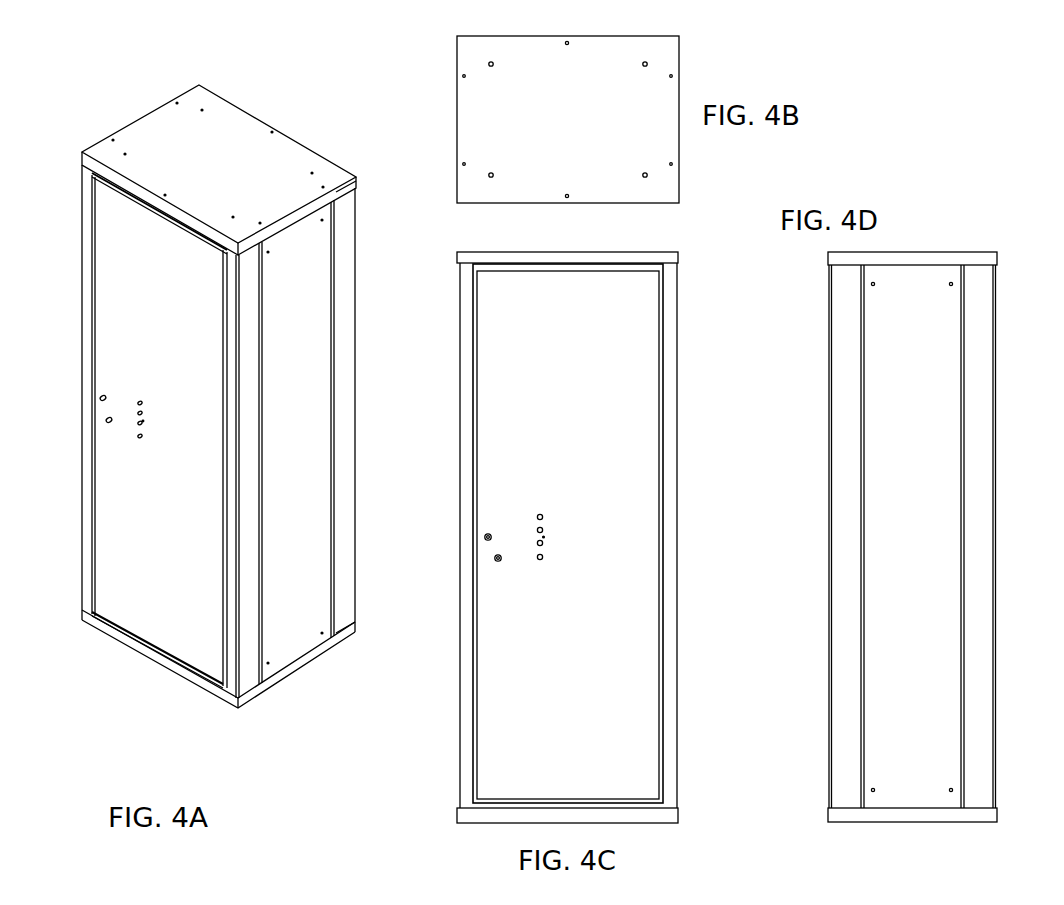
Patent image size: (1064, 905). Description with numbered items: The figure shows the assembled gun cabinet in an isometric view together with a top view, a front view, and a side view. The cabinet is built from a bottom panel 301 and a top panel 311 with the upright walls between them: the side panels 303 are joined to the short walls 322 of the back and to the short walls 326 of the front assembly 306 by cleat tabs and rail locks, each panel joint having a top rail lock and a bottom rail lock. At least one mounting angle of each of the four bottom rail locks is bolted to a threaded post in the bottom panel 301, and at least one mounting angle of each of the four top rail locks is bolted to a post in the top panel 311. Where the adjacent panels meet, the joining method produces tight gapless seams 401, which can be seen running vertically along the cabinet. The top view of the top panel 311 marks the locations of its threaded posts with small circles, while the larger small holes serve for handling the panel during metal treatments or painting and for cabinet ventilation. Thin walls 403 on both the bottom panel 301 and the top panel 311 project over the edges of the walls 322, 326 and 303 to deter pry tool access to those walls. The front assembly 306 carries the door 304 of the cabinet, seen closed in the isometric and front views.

In FIG. 4D, the bottom panel 301 is at (903, 822).
In FIG. 4A, the side panel 303 is at (292, 605).
In FIG. 4D, the side panel 303 is at (912, 405).
In FIG. 4A, the door 304 is at (178, 595).
In FIG. 4C, the door 304 is at (630, 393).
In FIG. 4A, the front assembly 306 is at (87, 458).
In FIG. 4C, the front assembly 306 is at (672, 725).
In FIG. 4A, the top panel 311 is at (203, 153).
In FIG. 4B, the top panel 311 is at (477, 110).
In FIG. 4D, the top panel 311 is at (914, 252).
In FIG. 4A, the short walls of the back 322 is at (342, 592).
In FIG. 4D, the short walls of the back 322 is at (978, 353).
In FIG. 4A, the short walls of the front assembly 326 is at (245, 652).
In FIG. 4D, the short walls of the front assembly 326 is at (843, 365).
In FIG. 4A, the gapless seams 401 is at (262, 398).
In FIG. 4D, the gapless seams 401 is at (860, 570).
In FIG. 4A, the thin walls 403 is at (342, 188).